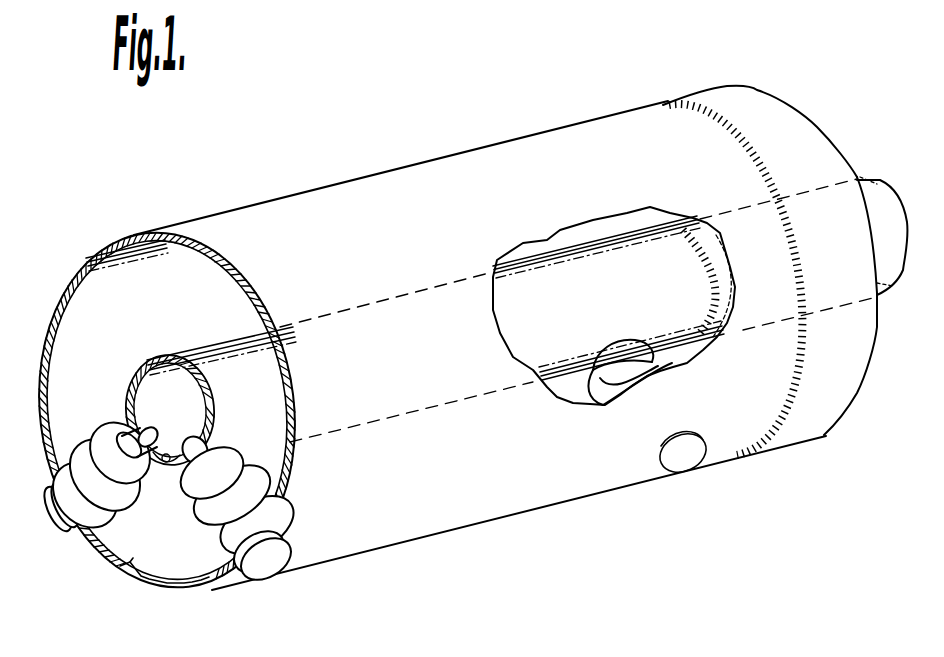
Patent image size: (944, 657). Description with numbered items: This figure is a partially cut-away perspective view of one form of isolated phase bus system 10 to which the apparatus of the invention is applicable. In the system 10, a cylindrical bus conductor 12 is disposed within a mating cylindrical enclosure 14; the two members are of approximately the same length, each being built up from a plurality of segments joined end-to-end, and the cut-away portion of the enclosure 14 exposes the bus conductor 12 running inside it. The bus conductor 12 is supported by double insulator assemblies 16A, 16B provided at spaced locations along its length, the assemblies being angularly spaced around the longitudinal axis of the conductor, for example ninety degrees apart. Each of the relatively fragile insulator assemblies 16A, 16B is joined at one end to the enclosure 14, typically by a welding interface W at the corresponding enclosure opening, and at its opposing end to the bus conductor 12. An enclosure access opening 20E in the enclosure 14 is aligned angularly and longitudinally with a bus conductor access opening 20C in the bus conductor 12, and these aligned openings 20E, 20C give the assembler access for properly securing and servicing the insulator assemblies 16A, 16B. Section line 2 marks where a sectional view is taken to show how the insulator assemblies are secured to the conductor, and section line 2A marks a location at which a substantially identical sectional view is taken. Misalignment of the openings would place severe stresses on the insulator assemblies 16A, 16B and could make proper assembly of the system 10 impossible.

The isolated phase bus system 10 is at (421, 156).
The cylindrical bus conductor 12 is at (220, 360).
The cylindrical enclosure 14 is at (110, 247).
The insulator assembly 16A is at (100, 436).
The insulator assembly 16B is at (200, 514).
The bus conductor access opening 20C is at (172, 450).
The enclosure access opening 20E is at (160, 580).
The welding interface W is at (718, 290).
The section line 2- 2 is at (166, 223).
The section line 2A- 2A is at (580, 117).